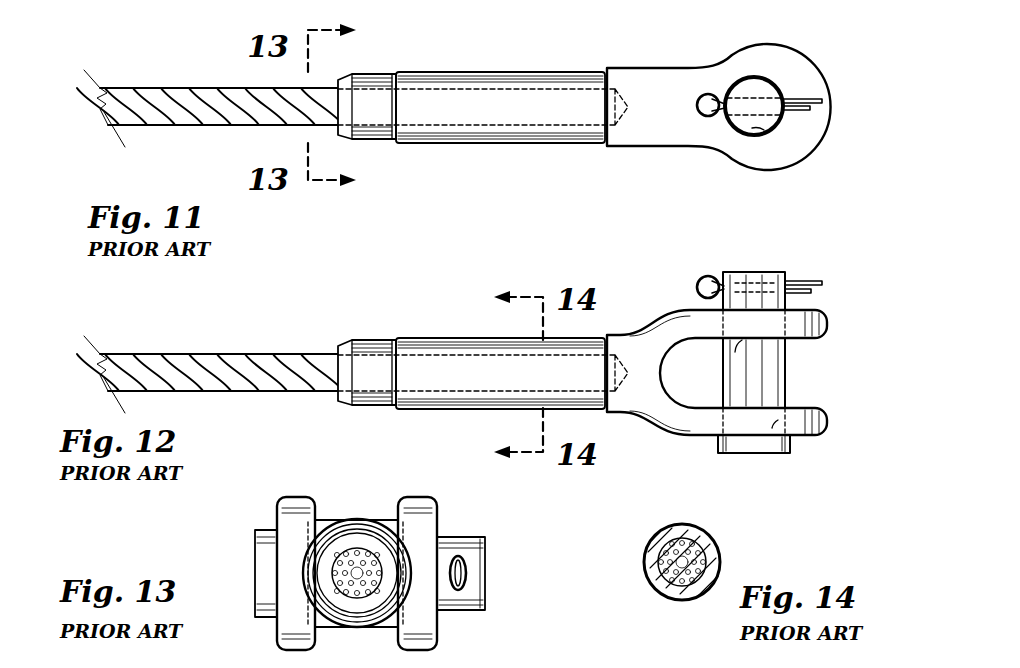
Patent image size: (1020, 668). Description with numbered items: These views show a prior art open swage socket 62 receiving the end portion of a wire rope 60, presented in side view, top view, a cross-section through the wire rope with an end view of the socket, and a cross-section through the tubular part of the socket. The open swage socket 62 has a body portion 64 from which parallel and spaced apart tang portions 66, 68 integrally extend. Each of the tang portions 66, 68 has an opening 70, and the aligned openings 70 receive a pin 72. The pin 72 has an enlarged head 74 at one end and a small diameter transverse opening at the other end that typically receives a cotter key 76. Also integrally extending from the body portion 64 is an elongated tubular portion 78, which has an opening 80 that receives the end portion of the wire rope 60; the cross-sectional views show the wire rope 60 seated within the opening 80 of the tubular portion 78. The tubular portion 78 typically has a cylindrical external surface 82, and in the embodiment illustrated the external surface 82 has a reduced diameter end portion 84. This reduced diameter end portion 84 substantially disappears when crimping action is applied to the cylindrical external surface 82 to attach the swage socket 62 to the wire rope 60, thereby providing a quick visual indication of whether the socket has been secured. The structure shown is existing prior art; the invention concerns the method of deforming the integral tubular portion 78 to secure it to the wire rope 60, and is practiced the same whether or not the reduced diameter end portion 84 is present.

In FIG. 11, the wire rope 60 is at (178, 110).
In FIG. 12, the wire rope 60 is at (211, 355).
In FIG. 13, the wire rope 60 is at (348, 548).
In FIG. 11, the open swage socket 62 is at (818, 55).
In FIG. 12, the open swage socket 62 is at (832, 288).
In FIG. 13, the open swage socket 62 is at (455, 523).
In FIG. 11, the body portion 64 is at (660, 126).
In FIG. 12, the body portion 64 is at (635, 345).
In FIG. 13, the body portion 64 is at (288, 555).
In FIG. 11, the tang portion 66 is at (756, 62).
In FIG. 12, the tang portion 66 is at (763, 323).
In FIG. 12, the tang portion 68 is at (752, 428).
In FIG. 11, the opening 70 is at (777, 126).
In FIG. 12, the opening 70 is at (740, 346).
In FIG. 11, the pin 72 is at (748, 88).
In FIG. 12, the pin 72 is at (758, 390).
In FIG. 12, the enlarged head 74 is at (722, 448).
In FIG. 11, the cotter key 76 is at (700, 94).
In FIG. 12, the cotter key 76 is at (700, 277).
In FIG. 13, the cotter key 76 is at (459, 592).
In FIG. 11, the tubular portion 78 is at (532, 104).
In FIG. 12, the tubular portion 78 is at (483, 338).
In FIG. 14, the tubular portion 78 is at (657, 540).
In FIG. 11, the opening 80 is at (481, 116).
In FIG. 12, the opening 80 is at (500, 411).
In FIG. 13, the opening 80 is at (353, 598).
In FIG. 14, the opening 80 is at (705, 552).
In FIG. 11, the cylindrical external surface 82 is at (490, 72).
In FIG. 12, the cylindrical external surface 82 is at (500, 306).
In FIG. 14, the cylindrical external surface 82 is at (650, 590).
In FIG. 11, the reduced diameter end portion 84 is at (365, 75).
In FIG. 12, the reduced diameter end portion 84 is at (365, 345).